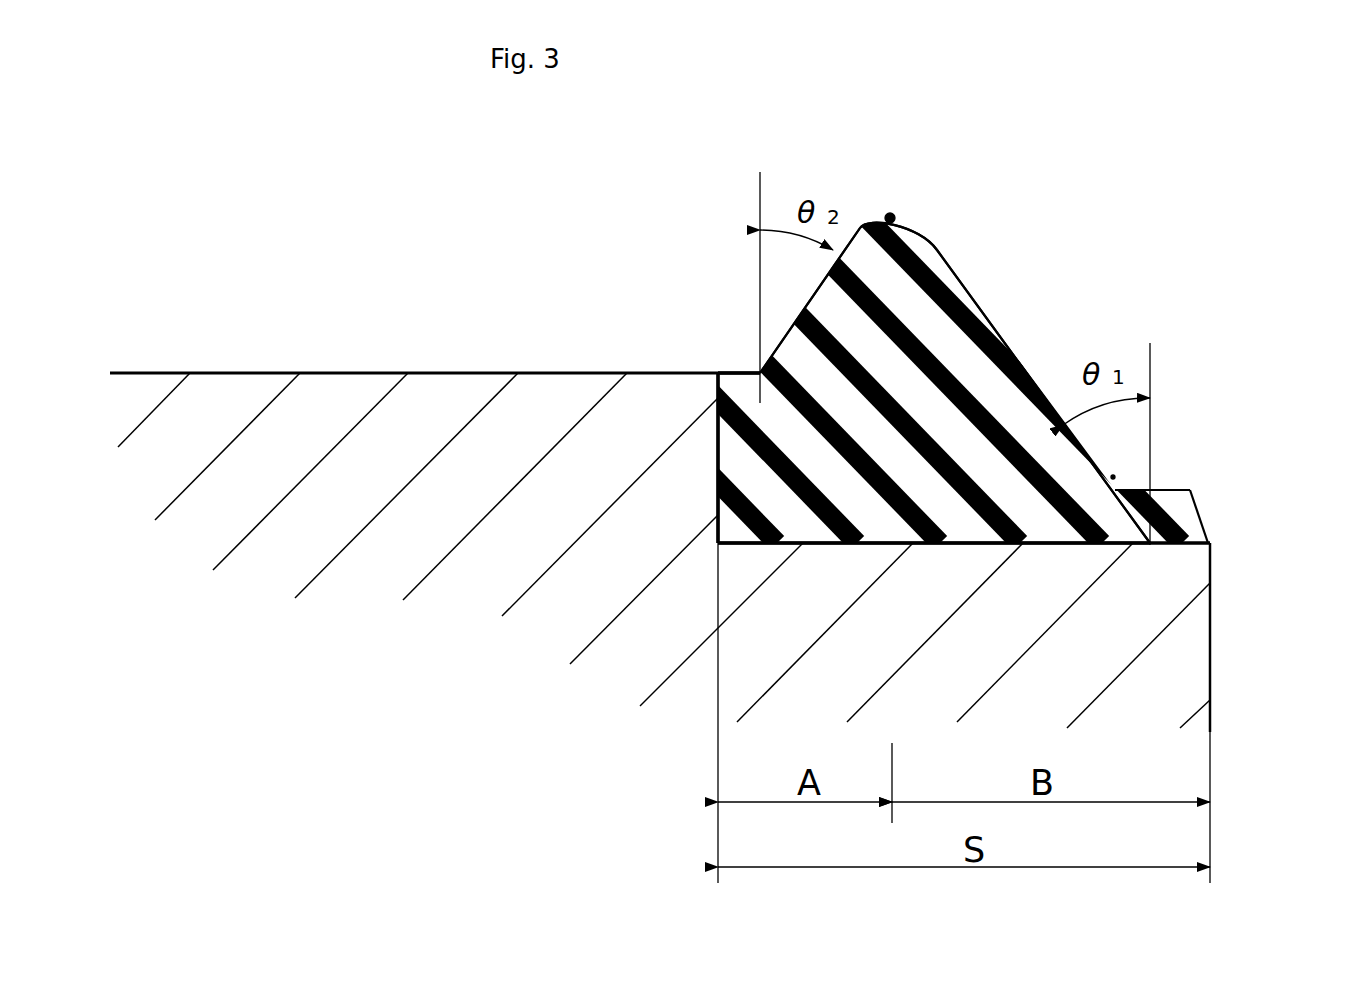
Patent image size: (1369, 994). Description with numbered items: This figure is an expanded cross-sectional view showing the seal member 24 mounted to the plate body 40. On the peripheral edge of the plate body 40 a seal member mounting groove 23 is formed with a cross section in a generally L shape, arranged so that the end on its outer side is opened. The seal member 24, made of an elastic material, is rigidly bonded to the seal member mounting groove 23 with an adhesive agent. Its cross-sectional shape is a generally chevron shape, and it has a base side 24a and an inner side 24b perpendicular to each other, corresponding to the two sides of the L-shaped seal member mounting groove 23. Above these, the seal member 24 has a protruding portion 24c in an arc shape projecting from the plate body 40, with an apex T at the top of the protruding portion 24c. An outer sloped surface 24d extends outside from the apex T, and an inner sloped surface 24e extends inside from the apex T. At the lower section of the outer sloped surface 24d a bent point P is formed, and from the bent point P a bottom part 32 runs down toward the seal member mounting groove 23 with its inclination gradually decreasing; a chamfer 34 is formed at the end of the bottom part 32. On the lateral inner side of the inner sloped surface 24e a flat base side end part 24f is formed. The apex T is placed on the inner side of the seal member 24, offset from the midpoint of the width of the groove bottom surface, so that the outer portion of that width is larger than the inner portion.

The seal member 24 is at (1010, 334).
The base side 24a is at (837, 545).
The inner side 24b is at (720, 435).
The protruding portion 24c is at (880, 262).
The outer sloped surface 24d is at (968, 278).
The inner sloped surface 24e is at (808, 298).
The flat base side end part 24f is at (734, 378).
The seal member mounting groove 23 is at (975, 543).
The bottom part 32 is at (1185, 505).
The chamfer 34 is at (1205, 517).
The plate body 40 is at (1160, 683).
The apex T is at (890, 217).
The bent point P is at (1113, 477).